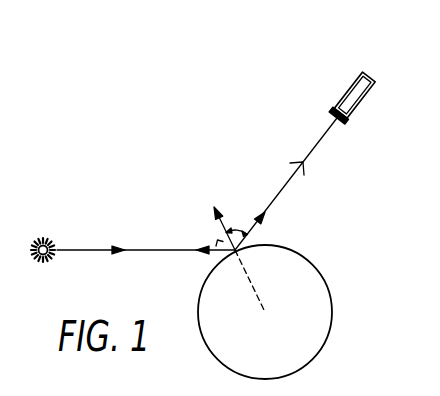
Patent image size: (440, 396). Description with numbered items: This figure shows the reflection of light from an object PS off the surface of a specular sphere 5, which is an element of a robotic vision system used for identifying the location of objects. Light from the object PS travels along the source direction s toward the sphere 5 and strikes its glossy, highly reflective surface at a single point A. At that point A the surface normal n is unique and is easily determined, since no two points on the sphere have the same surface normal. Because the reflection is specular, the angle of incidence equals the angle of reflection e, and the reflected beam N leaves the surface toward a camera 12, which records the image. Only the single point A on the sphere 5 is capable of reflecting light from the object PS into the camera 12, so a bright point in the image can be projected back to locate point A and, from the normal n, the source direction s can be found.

The object PS is at (46, 238).
The source direction s is at (146, 261).
The surface normal n is at (230, 247).
The reflected light beam N is at (286, 184).
The angle of reflection e is at (237, 222).
The point A is at (254, 259).
The spherical workpiece 5 is at (303, 353).
The camera 12 is at (368, 70).